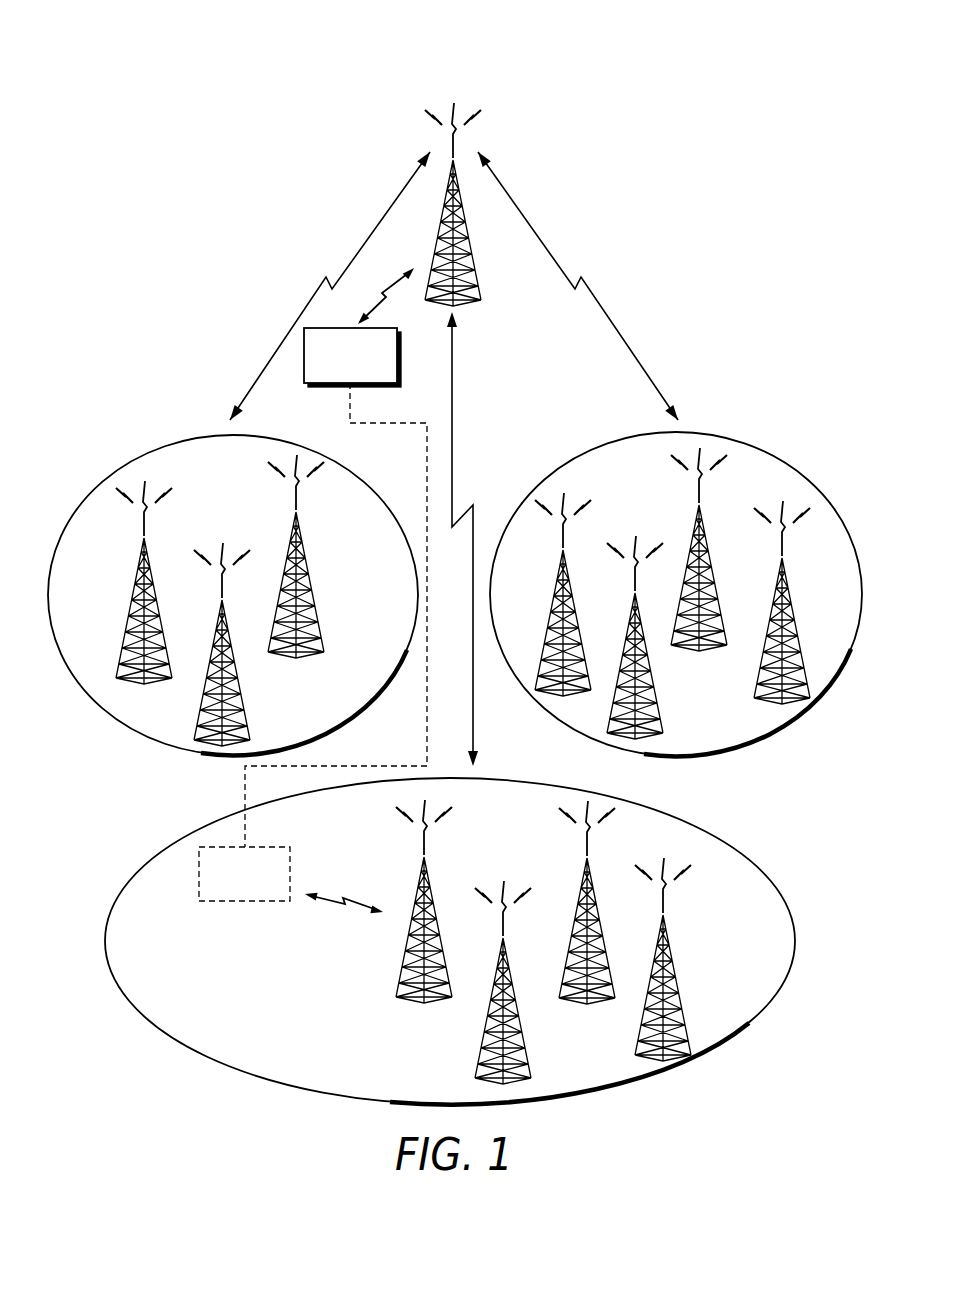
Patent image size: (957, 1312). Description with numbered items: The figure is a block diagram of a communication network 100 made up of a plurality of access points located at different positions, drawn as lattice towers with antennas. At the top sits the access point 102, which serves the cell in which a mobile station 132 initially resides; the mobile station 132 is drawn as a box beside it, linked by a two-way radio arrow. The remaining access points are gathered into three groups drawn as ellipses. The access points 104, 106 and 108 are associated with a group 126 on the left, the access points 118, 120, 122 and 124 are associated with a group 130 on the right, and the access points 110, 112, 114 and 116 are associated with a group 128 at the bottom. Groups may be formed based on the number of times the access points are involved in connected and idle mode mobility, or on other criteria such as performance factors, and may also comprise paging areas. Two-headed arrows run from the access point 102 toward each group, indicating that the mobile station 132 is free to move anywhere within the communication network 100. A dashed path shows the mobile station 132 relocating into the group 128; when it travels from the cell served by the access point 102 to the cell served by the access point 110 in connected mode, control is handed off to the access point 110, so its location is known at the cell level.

The communication network 100 is at (779, 35).
The access point 102 is at (470, 300).
The access point 104 is at (130, 604).
The access point 106 is at (240, 671).
The access point 108 is at (310, 578).
The access point 110 is at (447, 951).
The access point 112 is at (526, 1035).
The access point 114 is at (603, 924).
The access point 116 is at (679, 980).
The access point 118 is at (577, 611).
The access point 120 is at (655, 671).
The access point 122 is at (798, 621).
The access point 124 is at (716, 566).
The group 126 is at (329, 458).
The group 128 is at (588, 796).
The group 130 is at (756, 452).
The mobile station 132 is at (385, 328).